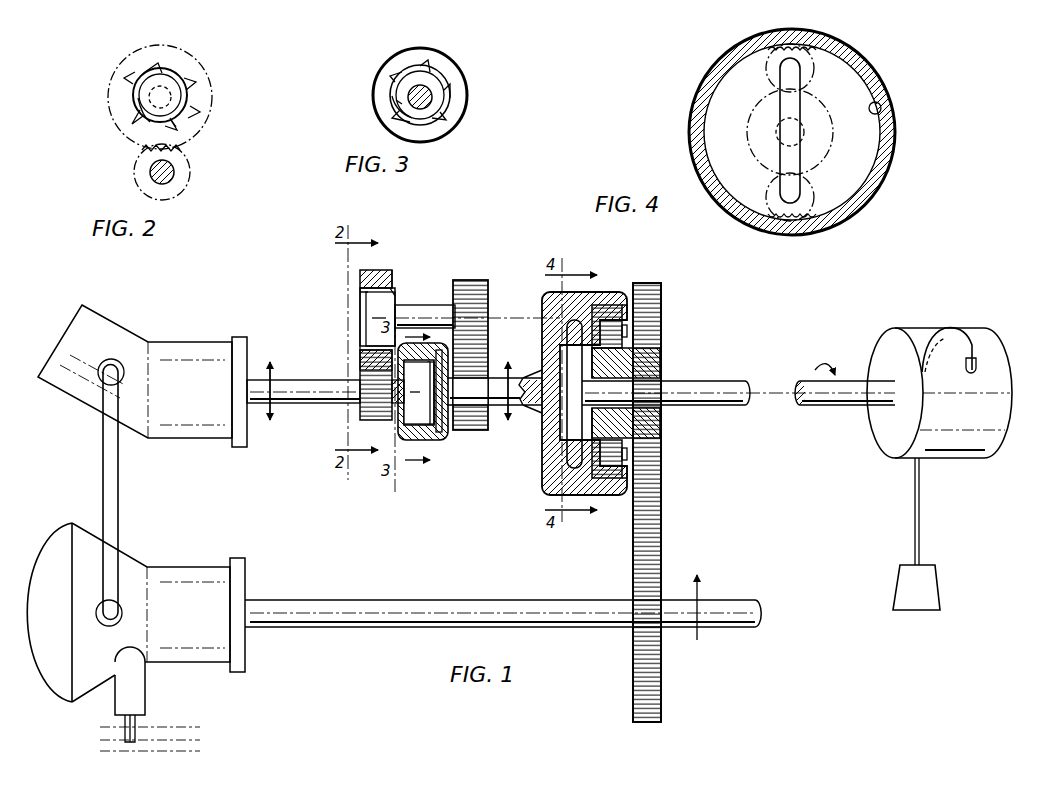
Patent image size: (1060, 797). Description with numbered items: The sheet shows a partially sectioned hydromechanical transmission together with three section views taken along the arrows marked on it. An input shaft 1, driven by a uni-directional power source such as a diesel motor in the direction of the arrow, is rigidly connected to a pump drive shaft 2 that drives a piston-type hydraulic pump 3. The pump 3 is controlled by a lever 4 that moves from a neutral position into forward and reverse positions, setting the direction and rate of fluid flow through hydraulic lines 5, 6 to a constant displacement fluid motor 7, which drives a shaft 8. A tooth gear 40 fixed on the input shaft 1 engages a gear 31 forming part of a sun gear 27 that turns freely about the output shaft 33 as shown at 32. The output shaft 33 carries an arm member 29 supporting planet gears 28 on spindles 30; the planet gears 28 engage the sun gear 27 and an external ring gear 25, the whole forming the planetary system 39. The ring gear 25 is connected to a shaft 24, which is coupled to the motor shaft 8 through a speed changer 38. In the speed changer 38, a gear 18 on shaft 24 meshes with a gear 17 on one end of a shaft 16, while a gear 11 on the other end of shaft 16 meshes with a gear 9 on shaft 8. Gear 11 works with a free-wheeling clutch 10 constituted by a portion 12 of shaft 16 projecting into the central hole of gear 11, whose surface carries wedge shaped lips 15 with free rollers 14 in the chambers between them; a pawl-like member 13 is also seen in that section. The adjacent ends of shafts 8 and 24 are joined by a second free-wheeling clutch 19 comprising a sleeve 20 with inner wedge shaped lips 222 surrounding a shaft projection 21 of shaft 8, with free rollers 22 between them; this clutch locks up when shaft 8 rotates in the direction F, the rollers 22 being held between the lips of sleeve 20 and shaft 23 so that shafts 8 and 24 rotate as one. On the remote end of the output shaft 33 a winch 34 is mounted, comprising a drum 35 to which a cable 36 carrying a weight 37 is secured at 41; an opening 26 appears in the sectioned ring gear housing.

In FIG. 1, the input shaft 1 is at (740, 600).
In FIG. 1, the pump drive shaft 2 is at (503, 607).
In FIG. 1, the piston-type hydraulic pump 3 is at (236, 558).
In FIG. 1, the lever 4 is at (125, 728).
In FIG. 1, the hydraulic line 5 is at (103, 478).
In FIG. 1, the hydraulic line 6 is at (118, 483).
In FIG. 1, the constant displacement fluid motor 7 is at (128, 328).
In FIG. 2, the shaft 8 is at (174, 178).
In FIG. 1, the shaft 8 is at (292, 378).
In FIG. 2, the gear 9 is at (178, 148).
In FIG. 1, the gear 9 is at (362, 372).
In FIG. 2, the free-wheeling clutch 10 is at (196, 73).
In FIG. 1, the free-wheeling clutch 10 is at (360, 278).
In FIG. 2, the gear 11 is at (178, 138).
In FIG. 1, the gear 11 is at (378, 272).
In FIG. 2, the portion of shaft 12 is at (148, 86).
In FIG. 1, the portion of shaft 12 is at (368, 325).
In FIG. 2, the pawl 13 is at (130, 120).
In FIG. 1, the pawl 13 is at (360, 292).
In FIG. 2, the free rollers 14 is at (195, 100).
In FIG. 1, the free rollers 14 is at (372, 296).
In FIG. 2, the wedge shaped lips 15 is at (145, 128).
In FIG. 1, the wedge shaped lips 15 is at (392, 285).
In FIG. 1, the shaft 16 is at (412, 307).
In FIG. 1, the gear 17 is at (475, 285).
In FIG. 1, the gear 18 is at (470, 420).
In FIG. 3, the free-wheeling clutch 19 is at (462, 62).
In FIG. 1, the free-wheeling clutch 19 is at (395, 430).
In FIG. 3, the sleeve 20 is at (456, 96).
In FIG. 1, the sleeve 20 is at (442, 440).
In FIG. 3, the shaft projection 21 is at (432, 112).
In FIG. 1, the shaft projection 21 is at (408, 420).
In FIG. 3, the free rollers 22 is at (458, 104).
In FIG. 1, the free rollers 22 is at (430, 442).
In FIG. 3, the wedge shaped lips 222 is at (395, 102).
In FIG. 3, the shaft 23 is at (410, 88).
In FIG. 1, the shaft 23 is at (395, 395).
In FIG. 1, the shaft 24 is at (498, 405).
In FIG. 4, the ring gear 25 is at (890, 138).
In FIG. 1, the ring gear 25 is at (612, 496).
In FIG. 4, the housing opening 26 is at (880, 105).
In FIG. 1, the housing opening 26 is at (610, 310).
In FIG. 4, the sun gear 27 is at (812, 172).
In FIG. 1, the sun gear 27 is at (600, 428).
In FIG. 4, the planet gears 28 is at (822, 48).
In FIG. 1, the planet gears 28 is at (565, 312).
In FIG. 4, the arm member 29 is at (795, 110).
In FIG. 1, the arm member 29 is at (572, 345).
In FIG. 1, the spindles 30 is at (628, 333).
In FIG. 1, the gear 31 is at (655, 360).
In FIG. 1, the free mounting 32 is at (655, 413).
In FIG. 1, the output shaft 33 is at (718, 383).
In FIG. 1, the winch 34 is at (910, 325).
In FIG. 1, the drum 35 is at (975, 332).
In FIG. 1, the cable 36 is at (920, 510).
In FIG. 1, the weight 37 is at (928, 580).
In FIG. 1, the speed changer 38 is at (448, 260).
In FIG. 1, the planetary system 39 is at (638, 282).
In FIG. 1, the tooth gear 40 is at (662, 566).
In FIG. 1, the cable attachment 41 is at (978, 362).